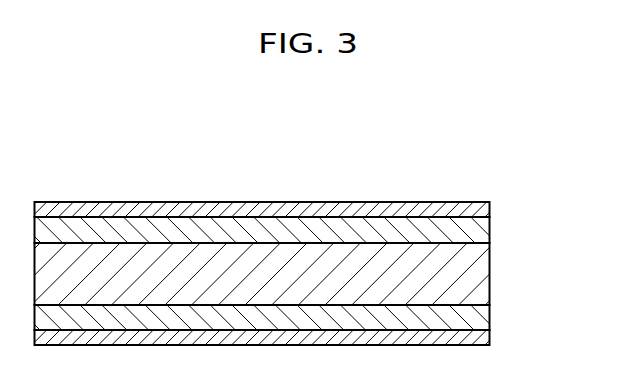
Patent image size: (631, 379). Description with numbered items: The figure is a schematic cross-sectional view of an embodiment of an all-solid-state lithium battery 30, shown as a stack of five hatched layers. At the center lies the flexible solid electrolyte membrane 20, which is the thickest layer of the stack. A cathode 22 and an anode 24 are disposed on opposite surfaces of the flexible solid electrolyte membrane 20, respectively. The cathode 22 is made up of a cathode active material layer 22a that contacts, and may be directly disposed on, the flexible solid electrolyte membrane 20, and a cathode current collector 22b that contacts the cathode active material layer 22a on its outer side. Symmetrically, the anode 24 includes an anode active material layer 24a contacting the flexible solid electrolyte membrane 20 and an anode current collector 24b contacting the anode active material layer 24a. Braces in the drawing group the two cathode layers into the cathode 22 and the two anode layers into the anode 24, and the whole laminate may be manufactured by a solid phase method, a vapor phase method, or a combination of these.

The all-solid-state lithium battery 30 is at (302, 240).
The flexible solid electrolyte membrane 20 is at (488, 275).
The cathode 22 is at (309, 221).
The cathode active material layer 22a is at (490, 229).
The cathode current collector 22b is at (490, 209).
The anode 24 is at (309, 326).
The anode active material layer 24a is at (490, 320).
The anode current collector 24b is at (490, 337).